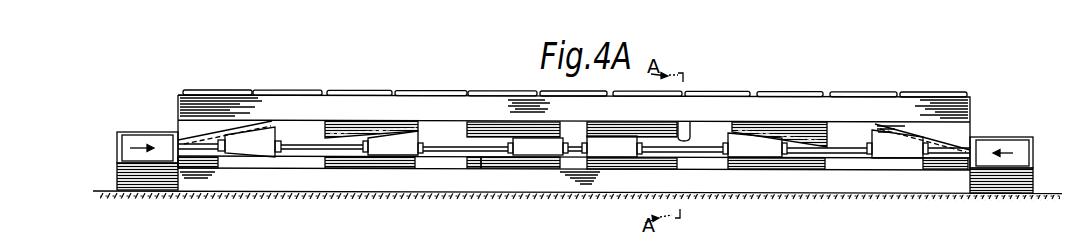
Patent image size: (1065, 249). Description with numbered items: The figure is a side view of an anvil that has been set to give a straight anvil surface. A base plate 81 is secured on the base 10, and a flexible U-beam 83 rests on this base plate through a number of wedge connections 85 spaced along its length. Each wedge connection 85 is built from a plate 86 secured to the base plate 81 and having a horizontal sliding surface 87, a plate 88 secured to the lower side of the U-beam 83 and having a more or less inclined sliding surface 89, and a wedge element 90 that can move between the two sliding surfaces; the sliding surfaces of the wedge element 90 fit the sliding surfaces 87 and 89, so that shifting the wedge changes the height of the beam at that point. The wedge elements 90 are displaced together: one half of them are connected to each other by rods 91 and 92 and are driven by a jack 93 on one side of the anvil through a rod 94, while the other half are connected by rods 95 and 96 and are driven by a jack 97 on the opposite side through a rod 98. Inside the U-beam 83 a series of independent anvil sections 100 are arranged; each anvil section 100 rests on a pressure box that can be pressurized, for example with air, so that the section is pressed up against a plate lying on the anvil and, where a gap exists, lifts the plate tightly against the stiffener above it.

The base 10 is at (557, 197).
The base plate 81 is at (408, 185).
The flexible U-beam 83 is at (382, 105).
The wedge connection 85 is at (685, 157).
The plate 86 is at (518, 163).
The horizontal sliding surface 87 is at (473, 158).
The plate 88 is at (338, 130).
The inclined sliding surface 89 is at (690, 138).
The wedge element 90 is at (607, 147).
The rod 91 is at (443, 147).
The rod 92 is at (297, 148).
The jack 93 is at (157, 138).
The rod 94 is at (210, 148).
The rod 95 is at (708, 148).
The rod 96 is at (840, 148).
The jack 97 is at (995, 138).
The rod 98 is at (943, 153).
The anvil section 100 is at (278, 93).